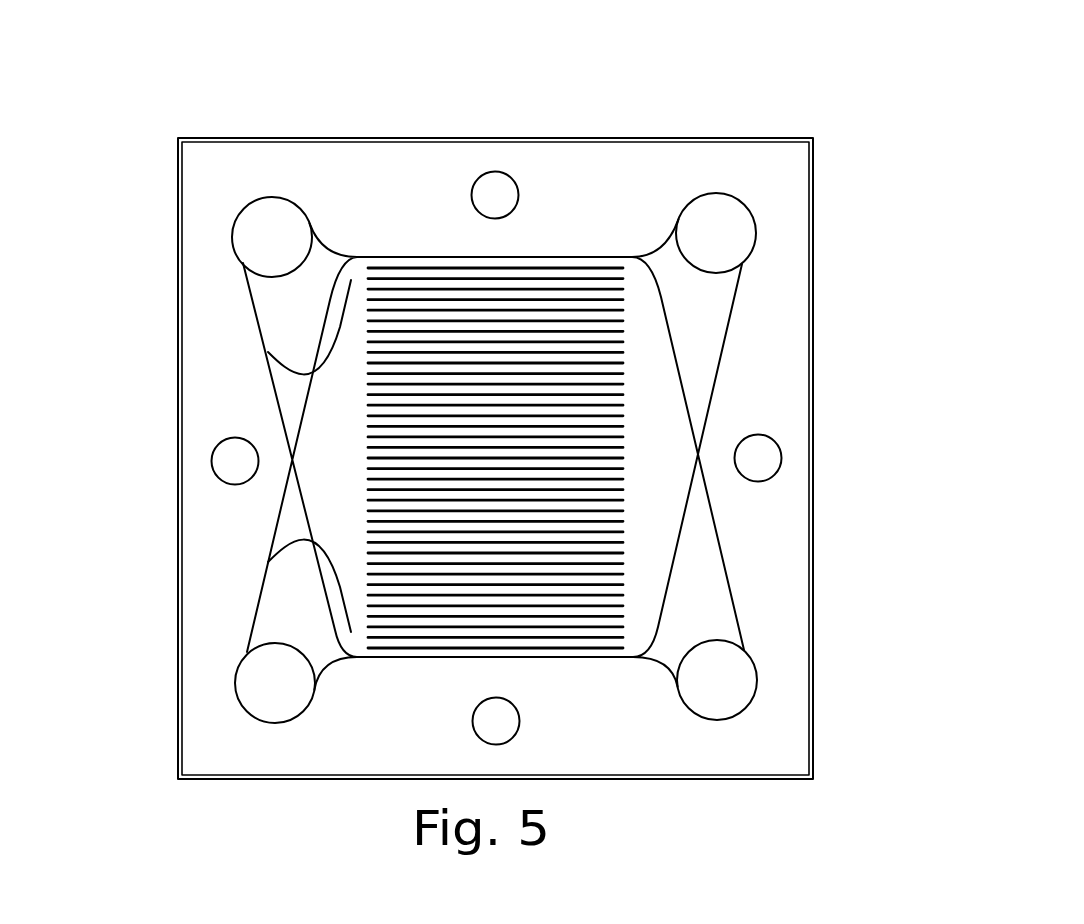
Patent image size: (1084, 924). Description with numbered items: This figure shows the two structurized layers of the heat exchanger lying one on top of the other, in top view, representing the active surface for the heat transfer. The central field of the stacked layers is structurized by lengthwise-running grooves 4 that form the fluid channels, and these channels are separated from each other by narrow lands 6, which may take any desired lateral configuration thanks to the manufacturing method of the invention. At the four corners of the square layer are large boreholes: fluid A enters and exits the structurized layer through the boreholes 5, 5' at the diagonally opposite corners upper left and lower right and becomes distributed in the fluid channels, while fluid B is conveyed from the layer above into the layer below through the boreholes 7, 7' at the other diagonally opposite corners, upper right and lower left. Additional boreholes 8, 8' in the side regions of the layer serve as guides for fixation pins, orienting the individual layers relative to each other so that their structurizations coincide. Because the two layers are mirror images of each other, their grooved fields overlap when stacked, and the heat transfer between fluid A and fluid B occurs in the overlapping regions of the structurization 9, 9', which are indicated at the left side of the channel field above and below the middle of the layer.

The grooves 4 is at (625, 505).
The borehole 5 is at (273, 165).
The borehole 5' is at (822, 680).
The narrow lands 6 is at (623, 342).
The borehole 7 is at (754, 158).
The borehole 7' is at (188, 739).
The additional borehole 8 is at (595, 435).
The additional borehole 8' is at (514, 401).
The overlapping region of the structurization 9 is at (206, 271).
The overlapping region of the structurization 9' is at (204, 612).